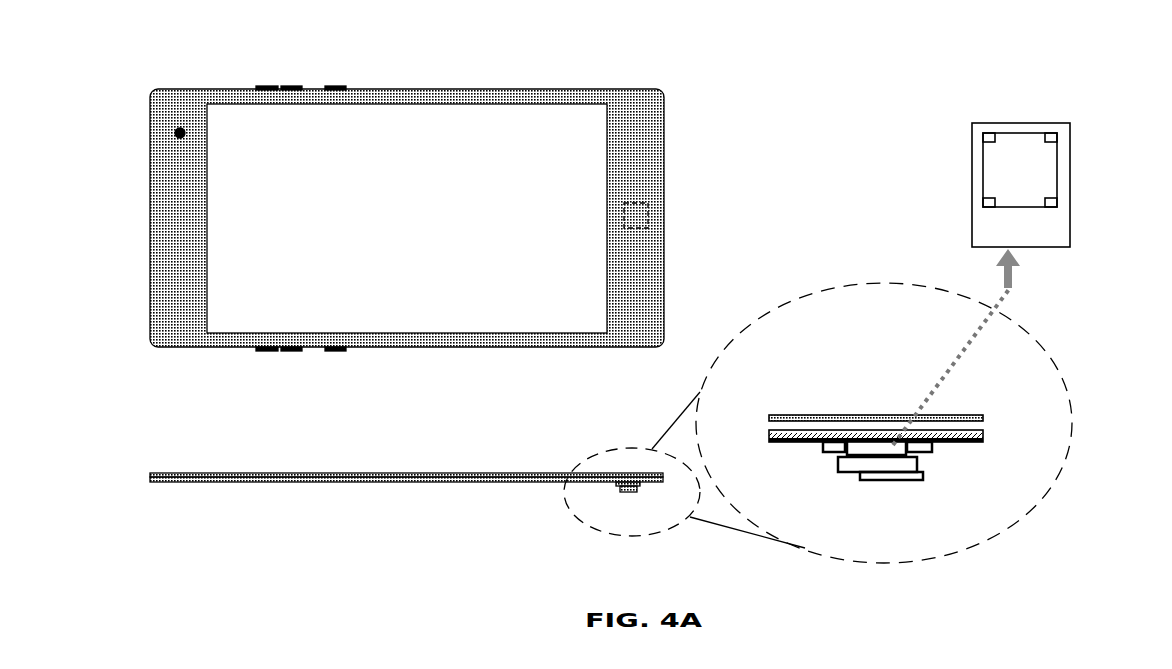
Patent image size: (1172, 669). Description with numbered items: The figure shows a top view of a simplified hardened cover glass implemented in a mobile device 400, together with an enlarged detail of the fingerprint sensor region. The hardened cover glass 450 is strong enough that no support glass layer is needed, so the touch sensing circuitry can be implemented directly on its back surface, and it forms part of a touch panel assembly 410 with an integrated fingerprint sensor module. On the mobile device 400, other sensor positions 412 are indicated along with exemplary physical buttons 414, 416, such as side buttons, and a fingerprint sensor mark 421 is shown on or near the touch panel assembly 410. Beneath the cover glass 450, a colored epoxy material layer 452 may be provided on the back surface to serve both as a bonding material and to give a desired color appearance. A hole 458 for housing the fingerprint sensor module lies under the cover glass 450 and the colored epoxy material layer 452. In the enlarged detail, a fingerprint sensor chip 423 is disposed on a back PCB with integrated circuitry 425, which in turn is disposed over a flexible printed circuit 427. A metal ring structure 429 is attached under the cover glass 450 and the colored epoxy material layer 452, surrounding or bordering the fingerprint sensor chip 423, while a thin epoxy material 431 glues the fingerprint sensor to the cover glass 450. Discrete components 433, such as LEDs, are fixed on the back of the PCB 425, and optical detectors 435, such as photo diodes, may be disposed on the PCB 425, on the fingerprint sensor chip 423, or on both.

The mobile device 400 is at (866, 88).
The touch panel assembly 410 is at (230, 241).
The sensor positions 412 is at (176, 128).
The physical buttons 414 is at (340, 87).
The physical buttons 416 is at (336, 352).
The fingerprint sensor mark 421 is at (651, 207).
The fingerprint sensor chip 423 is at (879, 440).
The back PCB with integrated circuitry 425 is at (848, 473).
The flexible printed circuit (FPC) 427 is at (908, 481).
The metal ring structure 429 is at (830, 453).
The thin epoxy material 431 is at (877, 441).
The discrete components 433 is at (1060, 137).
The optical detectors 435 is at (989, 137).
The cover glass 450 is at (203, 473).
The colored epoxy material layer 452 is at (150, 475).
The hole 458 is at (612, 493).